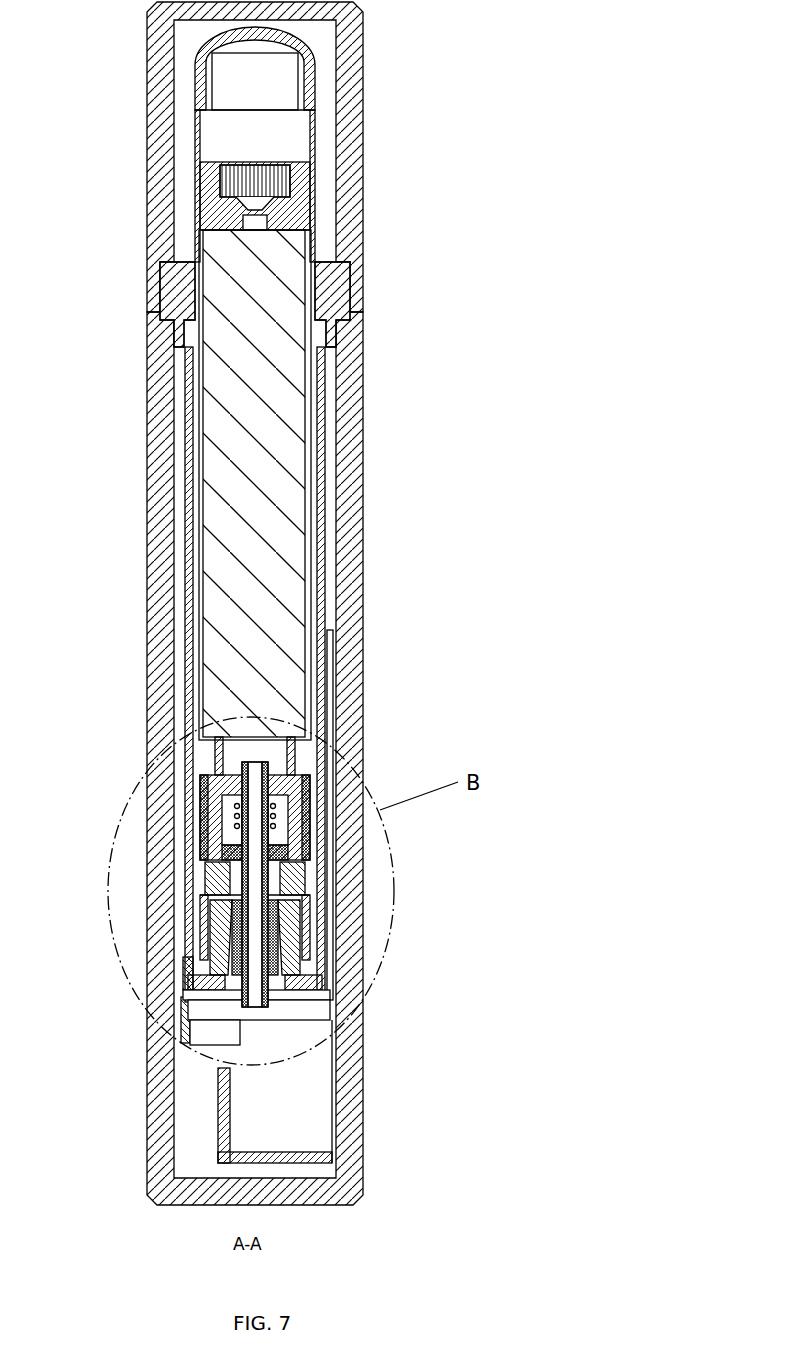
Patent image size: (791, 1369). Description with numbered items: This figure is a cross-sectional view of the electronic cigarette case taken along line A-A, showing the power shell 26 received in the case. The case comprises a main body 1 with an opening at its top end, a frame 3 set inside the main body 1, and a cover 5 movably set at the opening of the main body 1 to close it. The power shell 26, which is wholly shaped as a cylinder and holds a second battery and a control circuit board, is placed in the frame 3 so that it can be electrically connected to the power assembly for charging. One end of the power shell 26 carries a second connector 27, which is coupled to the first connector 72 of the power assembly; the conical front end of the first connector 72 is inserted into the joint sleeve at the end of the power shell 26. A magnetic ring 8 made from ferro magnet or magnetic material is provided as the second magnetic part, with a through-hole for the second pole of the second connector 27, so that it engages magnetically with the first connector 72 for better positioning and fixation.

The main body 1 is at (351, 540).
The frame 3 is at (338, 298).
The cover 5 is at (343, 90).
The magnetic ring 8 is at (268, 878).
The power shell 26 is at (222, 252).
The second connector 27 is at (205, 835).
The first connector 72 is at (200, 945).